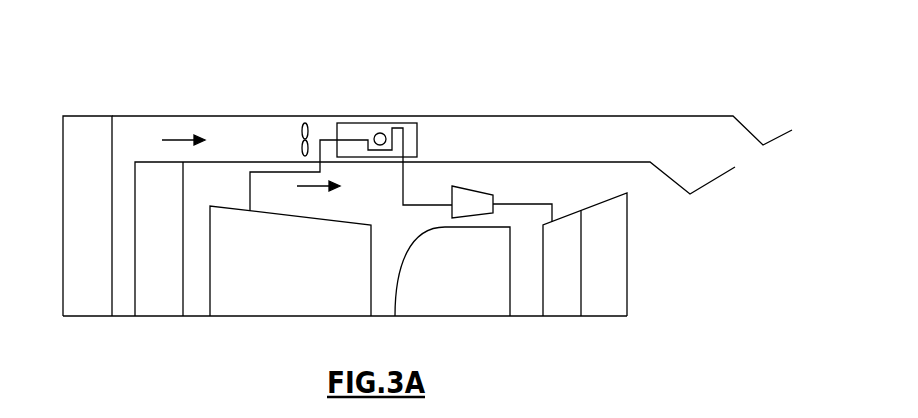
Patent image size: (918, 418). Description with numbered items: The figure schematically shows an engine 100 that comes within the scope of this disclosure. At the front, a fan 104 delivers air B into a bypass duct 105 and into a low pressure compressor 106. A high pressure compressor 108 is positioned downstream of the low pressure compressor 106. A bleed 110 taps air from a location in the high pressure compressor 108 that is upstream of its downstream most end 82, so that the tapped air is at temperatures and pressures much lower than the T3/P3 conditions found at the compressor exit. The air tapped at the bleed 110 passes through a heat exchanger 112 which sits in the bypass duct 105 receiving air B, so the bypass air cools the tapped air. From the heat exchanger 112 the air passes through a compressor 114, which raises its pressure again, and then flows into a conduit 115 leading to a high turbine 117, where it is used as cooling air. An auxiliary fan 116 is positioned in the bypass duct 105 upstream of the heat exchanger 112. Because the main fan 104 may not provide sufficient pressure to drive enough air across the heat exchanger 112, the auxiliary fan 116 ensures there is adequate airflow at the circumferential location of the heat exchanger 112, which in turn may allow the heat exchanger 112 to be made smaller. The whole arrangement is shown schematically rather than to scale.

The engine 100 is at (345, 62).
The fan 104 is at (93, 137).
The bypass duct 105 is at (227, 137).
The low pressure compressor 106 is at (158, 300).
The high pressure compressor 108 is at (250, 303).
The bleed 110 is at (250, 195).
The heat exchanger 112 is at (380, 124).
The compressor 114 is at (452, 186).
The conduit 115 is at (530, 200).
The auxiliary fan 116 is at (302, 121).
The high turbine 117 is at (565, 303).
The downstream most end 82 is at (370, 223).